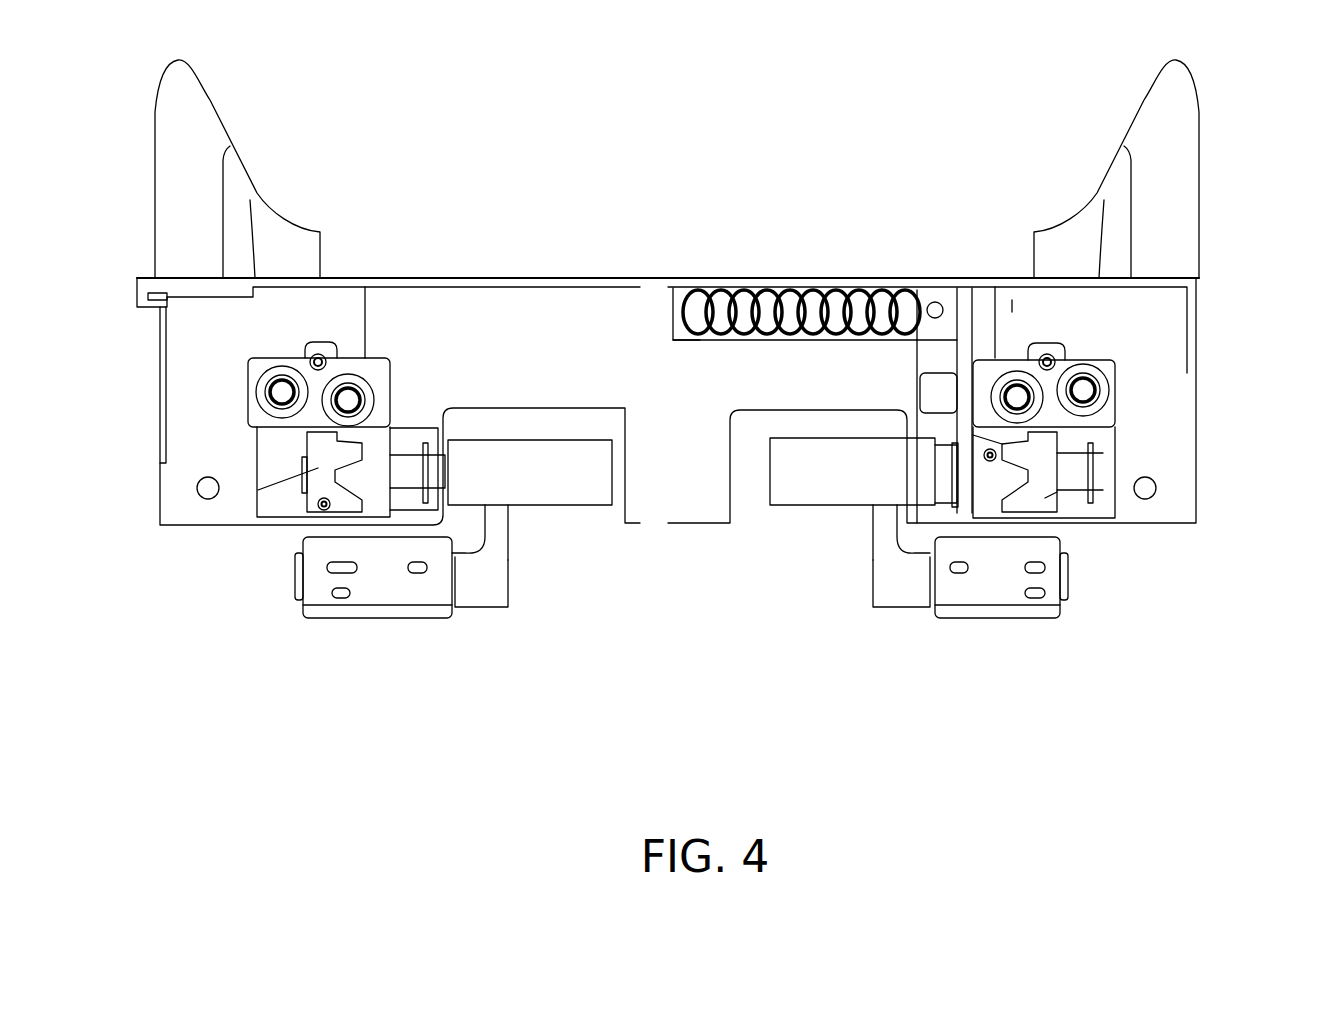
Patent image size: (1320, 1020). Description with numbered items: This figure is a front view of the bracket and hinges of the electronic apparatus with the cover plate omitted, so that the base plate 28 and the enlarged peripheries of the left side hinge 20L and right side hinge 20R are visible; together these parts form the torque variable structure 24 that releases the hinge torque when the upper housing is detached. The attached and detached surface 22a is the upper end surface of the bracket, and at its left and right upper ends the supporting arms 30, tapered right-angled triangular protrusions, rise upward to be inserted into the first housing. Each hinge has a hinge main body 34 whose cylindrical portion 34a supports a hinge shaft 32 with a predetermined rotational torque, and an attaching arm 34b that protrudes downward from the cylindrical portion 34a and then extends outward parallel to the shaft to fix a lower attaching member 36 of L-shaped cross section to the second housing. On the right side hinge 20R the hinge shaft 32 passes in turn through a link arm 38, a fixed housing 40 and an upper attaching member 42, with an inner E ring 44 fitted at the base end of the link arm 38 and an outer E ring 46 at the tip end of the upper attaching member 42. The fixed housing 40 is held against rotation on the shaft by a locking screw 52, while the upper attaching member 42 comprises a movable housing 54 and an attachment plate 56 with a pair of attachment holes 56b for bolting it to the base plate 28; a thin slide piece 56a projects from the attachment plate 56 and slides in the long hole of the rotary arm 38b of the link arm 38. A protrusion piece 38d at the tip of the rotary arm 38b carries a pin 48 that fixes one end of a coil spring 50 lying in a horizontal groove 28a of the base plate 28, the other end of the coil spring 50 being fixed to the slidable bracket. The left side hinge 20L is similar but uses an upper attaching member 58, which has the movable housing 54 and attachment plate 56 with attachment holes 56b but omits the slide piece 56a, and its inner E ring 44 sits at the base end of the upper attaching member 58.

The supporting arm 30 is at (200, 113).
The attached and detached surface 22a is at (468, 277).
The base plate 28 is at (1170, 417).
The torque variable structure 24 is at (1012, 312).
The coil spring 50 is at (790, 297).
The pin 48 is at (937, 302).
The protrusion piece 38d is at (912, 292).
The rotary arm 38b is at (917, 353).
The slide piece 56a is at (933, 393).
The groove 28a is at (705, 335).
The attachment plate 56 is at (252, 362).
The attachment hole 56b is at (332, 390).
The upper attaching member 58 is at (250, 407).
The upper attaching member 42 is at (1117, 388).
The fixed housing 40 is at (318, 467).
The locking screw 52 is at (321, 510).
The movable housing 54 is at (373, 492).
The inner E ring 44 is at (450, 455).
The hinge shaft 32 is at (407, 467).
The outer E ring 46 is at (1097, 470).
The link arm 38 is at (965, 500).
The hinge main body 34 is at (582, 486).
The cylindrical portion 34a is at (532, 492).
The attaching arm 34b is at (486, 598).
The lower attaching member 36 is at (392, 595).
The left side hinge 20L is at (346, 662).
The right side hinge 20R is at (1032, 640).